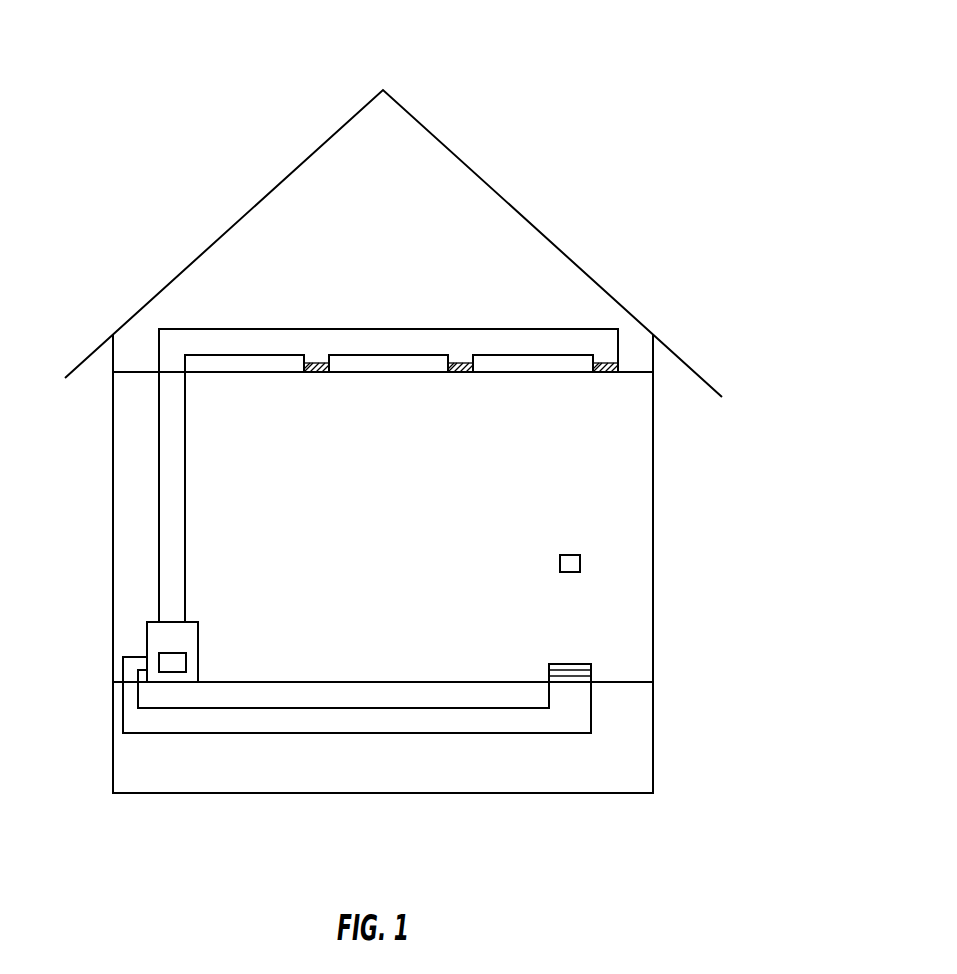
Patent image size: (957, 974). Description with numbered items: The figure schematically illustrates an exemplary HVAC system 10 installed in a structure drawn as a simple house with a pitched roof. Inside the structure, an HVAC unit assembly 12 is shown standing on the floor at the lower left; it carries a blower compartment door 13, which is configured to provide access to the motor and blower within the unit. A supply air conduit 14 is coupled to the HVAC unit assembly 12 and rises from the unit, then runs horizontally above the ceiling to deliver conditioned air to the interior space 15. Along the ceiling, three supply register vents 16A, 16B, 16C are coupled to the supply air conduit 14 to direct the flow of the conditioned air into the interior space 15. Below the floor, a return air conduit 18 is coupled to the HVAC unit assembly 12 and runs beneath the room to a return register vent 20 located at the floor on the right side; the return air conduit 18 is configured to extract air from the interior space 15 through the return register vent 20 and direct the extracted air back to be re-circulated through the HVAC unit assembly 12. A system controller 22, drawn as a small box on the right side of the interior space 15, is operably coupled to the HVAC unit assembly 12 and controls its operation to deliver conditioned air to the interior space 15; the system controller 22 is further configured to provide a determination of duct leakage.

The HVAC system 10 is at (657, 102).
The HVAC unit assembly 12 is at (198, 640).
The blower compartment door 13 is at (186, 662).
The supply air conduit 14 is at (185, 523).
The interior space 15 is at (386, 543).
The supply register vent 16A is at (311, 373).
The supply register vent 16B is at (455, 373).
The supply register vent 16C is at (600, 373).
The return air conduit 18 is at (502, 733).
The return register vent 20 is at (572, 665).
The system controller 22 is at (560, 563).